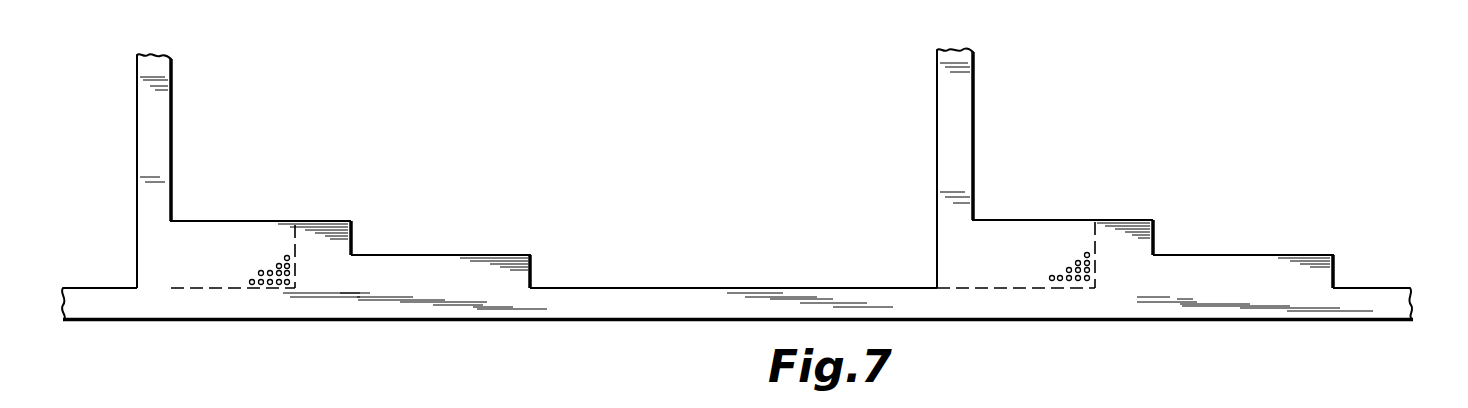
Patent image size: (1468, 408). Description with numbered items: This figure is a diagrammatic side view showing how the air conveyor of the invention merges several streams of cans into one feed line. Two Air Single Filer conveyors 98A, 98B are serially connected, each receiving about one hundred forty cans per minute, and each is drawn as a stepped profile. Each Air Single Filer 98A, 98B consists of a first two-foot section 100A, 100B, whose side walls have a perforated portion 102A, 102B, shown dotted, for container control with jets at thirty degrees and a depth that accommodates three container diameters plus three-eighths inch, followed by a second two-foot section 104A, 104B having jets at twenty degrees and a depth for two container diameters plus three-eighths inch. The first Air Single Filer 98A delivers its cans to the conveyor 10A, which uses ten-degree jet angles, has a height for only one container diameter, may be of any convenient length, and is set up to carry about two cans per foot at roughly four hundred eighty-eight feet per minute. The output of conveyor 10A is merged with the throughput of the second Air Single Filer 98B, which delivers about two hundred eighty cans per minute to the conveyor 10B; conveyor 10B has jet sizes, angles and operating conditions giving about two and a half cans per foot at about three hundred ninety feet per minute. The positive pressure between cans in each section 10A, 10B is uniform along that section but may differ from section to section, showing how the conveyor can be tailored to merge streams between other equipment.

The conveyor 10A is at (695, 295).
The conveyor 10B is at (1377, 295).
The Air Single Filer 98A is at (238, 219).
The Air Single Filer 98B is at (1048, 218).
The first section 100A is at (243, 270).
The first section 100B is at (1045, 267).
The perforated side wall portion 102A is at (298, 247).
The perforated side wall portion 102B is at (1097, 242).
The second section 104A is at (460, 268).
The second section 104B is at (1253, 265).